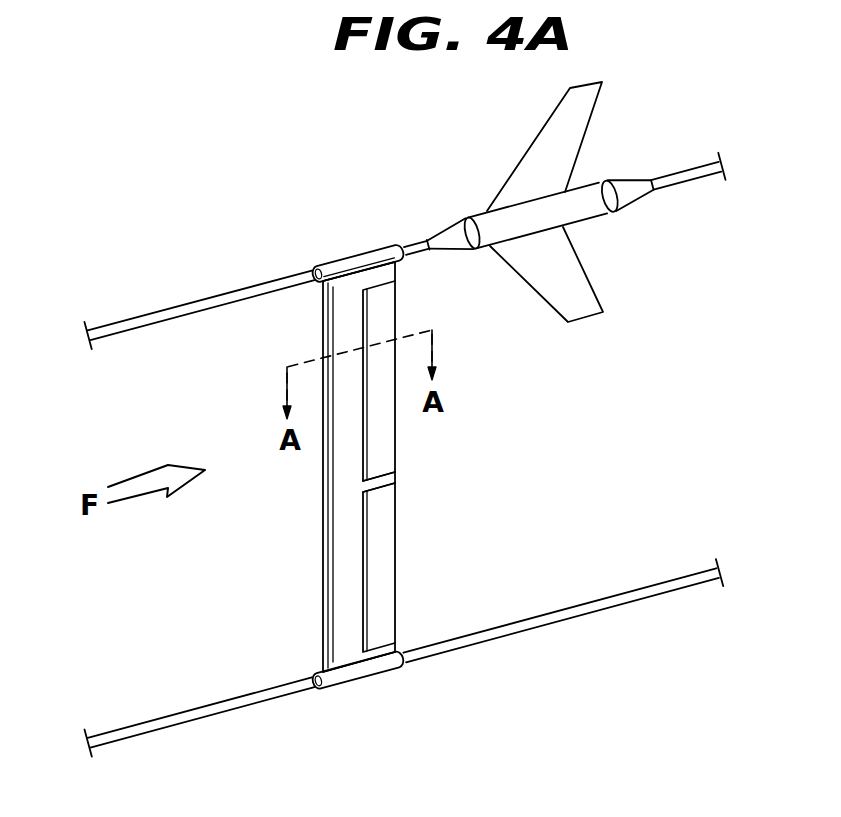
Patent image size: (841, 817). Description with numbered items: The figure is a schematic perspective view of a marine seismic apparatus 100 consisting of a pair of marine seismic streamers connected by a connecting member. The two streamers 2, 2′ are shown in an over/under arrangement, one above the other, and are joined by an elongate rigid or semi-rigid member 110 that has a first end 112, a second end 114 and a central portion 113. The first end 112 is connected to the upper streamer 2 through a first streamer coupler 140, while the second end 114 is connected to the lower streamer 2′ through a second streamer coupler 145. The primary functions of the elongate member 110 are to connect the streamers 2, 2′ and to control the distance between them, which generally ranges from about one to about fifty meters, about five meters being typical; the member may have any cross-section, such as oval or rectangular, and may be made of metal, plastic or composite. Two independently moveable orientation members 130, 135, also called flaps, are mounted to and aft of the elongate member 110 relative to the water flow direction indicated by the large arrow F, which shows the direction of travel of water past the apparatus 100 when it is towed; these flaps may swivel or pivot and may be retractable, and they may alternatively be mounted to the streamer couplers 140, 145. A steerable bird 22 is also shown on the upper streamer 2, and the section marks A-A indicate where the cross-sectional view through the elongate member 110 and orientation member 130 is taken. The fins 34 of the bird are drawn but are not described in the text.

The streamer 2 is at (697, 165).
The streamer 2′ is at (673, 578).
The steerable bird 22 is at (536, 202).
The fins 34 is at (578, 108).
The pair of marine seismic streamers 100 is at (300, 209).
The elongate rigid or semi-rigid member 110 is at (323, 507).
The first end 112 is at (343, 297).
The central portion 113 is at (392, 476).
The second end 114 is at (343, 658).
The orientation member 130 is at (387, 423).
The orientation member 135 is at (385, 563).
The first streamer coupler 140 is at (358, 256).
The second streamer coupler 145 is at (358, 683).